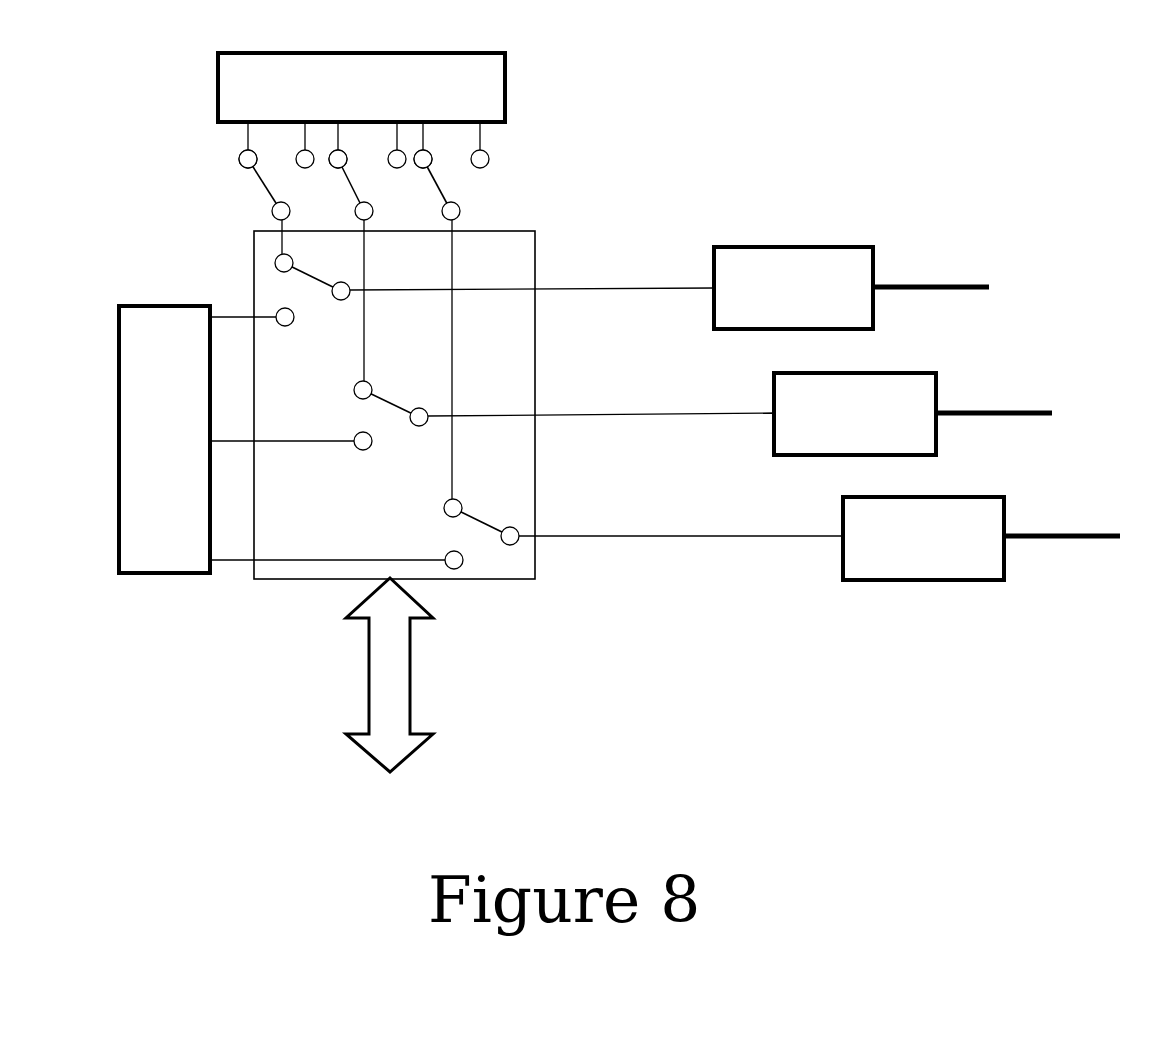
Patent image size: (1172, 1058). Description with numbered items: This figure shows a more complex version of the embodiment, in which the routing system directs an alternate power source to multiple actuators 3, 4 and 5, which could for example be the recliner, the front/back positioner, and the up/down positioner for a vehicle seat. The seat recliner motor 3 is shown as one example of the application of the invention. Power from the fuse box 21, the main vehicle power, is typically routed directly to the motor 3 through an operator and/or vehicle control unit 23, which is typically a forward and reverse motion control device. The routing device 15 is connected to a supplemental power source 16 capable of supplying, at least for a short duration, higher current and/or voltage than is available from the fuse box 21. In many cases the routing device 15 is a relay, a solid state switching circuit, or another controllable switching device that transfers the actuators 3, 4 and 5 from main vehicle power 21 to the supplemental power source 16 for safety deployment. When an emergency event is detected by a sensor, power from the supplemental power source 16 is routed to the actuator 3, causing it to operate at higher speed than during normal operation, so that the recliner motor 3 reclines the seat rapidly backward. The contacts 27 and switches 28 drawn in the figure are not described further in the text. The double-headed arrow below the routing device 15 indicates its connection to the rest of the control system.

The fuse box 21 is at (361, 87).
The contacts 27 is at (363, 140).
The operator and/or vehicle control unit 23 is at (242, 175).
The switches 28 is at (498, 192).
The routing device 15 is at (264, 289).
The supplemental power source 16 is at (282, 439).
The seat recliner motor 3 is at (787, 230).
The actuator 4 is at (956, 368).
The actuator 5 is at (923, 593).